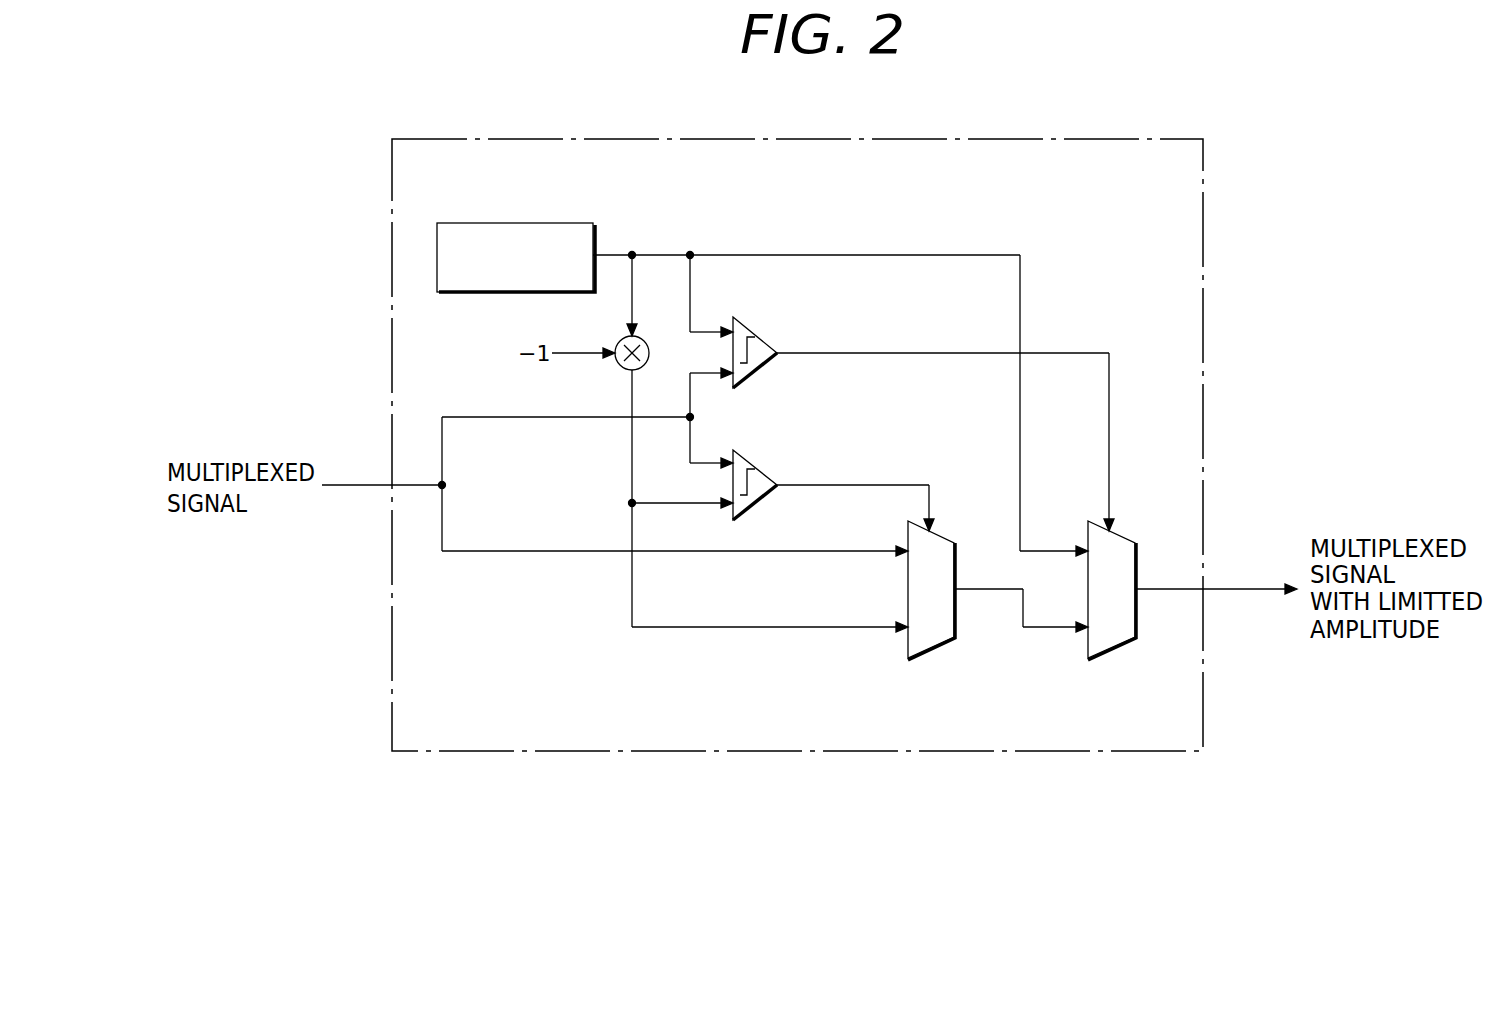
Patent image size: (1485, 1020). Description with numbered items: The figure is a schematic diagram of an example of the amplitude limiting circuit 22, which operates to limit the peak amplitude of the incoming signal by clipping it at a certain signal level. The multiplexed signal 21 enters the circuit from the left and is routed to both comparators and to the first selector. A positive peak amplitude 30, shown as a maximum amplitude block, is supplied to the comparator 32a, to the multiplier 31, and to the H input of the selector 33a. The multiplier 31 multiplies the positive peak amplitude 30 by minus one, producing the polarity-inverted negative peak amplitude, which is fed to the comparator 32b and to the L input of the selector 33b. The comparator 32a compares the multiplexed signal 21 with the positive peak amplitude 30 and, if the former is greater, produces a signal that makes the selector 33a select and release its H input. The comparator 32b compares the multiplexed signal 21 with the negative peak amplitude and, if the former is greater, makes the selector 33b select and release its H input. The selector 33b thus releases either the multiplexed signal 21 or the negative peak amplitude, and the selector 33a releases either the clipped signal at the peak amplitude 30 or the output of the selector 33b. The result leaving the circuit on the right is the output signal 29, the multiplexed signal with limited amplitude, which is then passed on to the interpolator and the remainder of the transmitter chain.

The multiplexed signal 21 is at (360, 485).
The amplitude limiting circuit 22 is at (1120, 138).
The output signal 29 is at (1237, 585).
The positive peak amplitude 30 is at (565, 223).
The multiplier 31 is at (648, 335).
The comparator 32a is at (752, 334).
The comparator 32b is at (752, 466).
The selector 33a is at (1137, 545).
The selector 33b is at (956, 545).